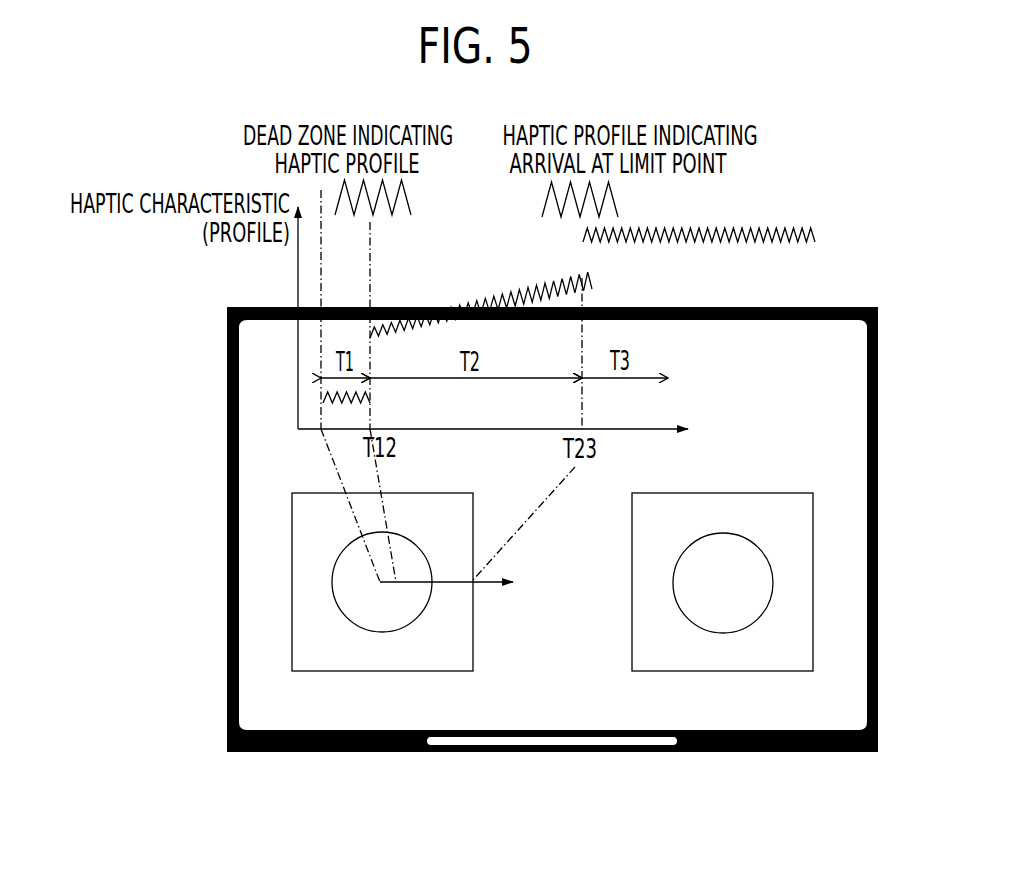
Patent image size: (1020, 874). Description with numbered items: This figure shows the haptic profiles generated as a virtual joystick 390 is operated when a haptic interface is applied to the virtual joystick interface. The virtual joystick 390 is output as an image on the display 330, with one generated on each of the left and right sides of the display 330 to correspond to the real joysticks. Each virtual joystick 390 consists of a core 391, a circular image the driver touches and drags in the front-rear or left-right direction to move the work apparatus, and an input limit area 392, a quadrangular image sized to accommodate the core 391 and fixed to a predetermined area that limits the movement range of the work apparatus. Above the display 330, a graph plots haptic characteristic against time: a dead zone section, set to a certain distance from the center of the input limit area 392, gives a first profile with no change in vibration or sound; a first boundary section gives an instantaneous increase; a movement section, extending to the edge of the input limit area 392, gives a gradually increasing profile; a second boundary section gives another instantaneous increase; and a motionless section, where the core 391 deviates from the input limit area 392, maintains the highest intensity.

The display 330 is at (772, 307).
The virtual joystick 390 is at (722, 665).
The core 391 is at (678, 621).
The input limit area 392 is at (730, 671).